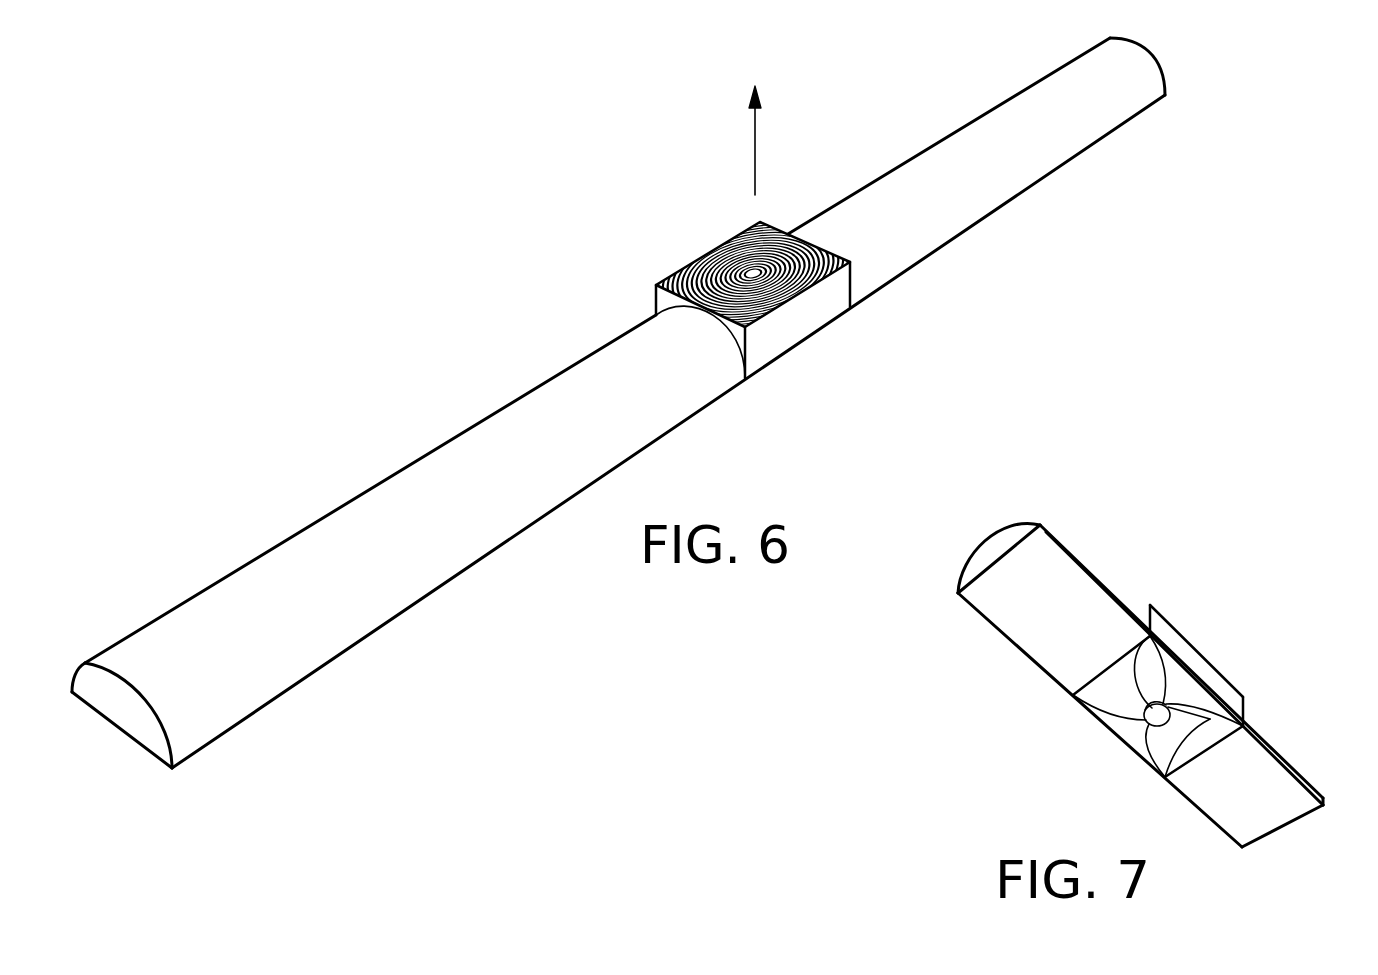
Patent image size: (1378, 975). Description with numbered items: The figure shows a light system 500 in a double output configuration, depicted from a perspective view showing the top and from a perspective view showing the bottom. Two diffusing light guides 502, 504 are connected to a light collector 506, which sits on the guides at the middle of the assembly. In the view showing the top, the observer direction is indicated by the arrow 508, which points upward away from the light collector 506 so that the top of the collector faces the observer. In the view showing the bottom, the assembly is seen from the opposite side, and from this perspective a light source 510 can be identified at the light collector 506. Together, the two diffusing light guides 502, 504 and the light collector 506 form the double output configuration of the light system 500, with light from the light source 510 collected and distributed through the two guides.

In FIG. 6, the light system 500 is at (490, 172).
In FIG. 6, the diffusing light guide 502 is at (1008, 187).
In FIG. 6, the diffusing light guide 504 is at (455, 565).
In FIG. 6, the light collector 506 is at (793, 332).
In FIG. 6, the arrow 508 is at (752, 145).
In FIG. 7, the light source 510 is at (1157, 716).